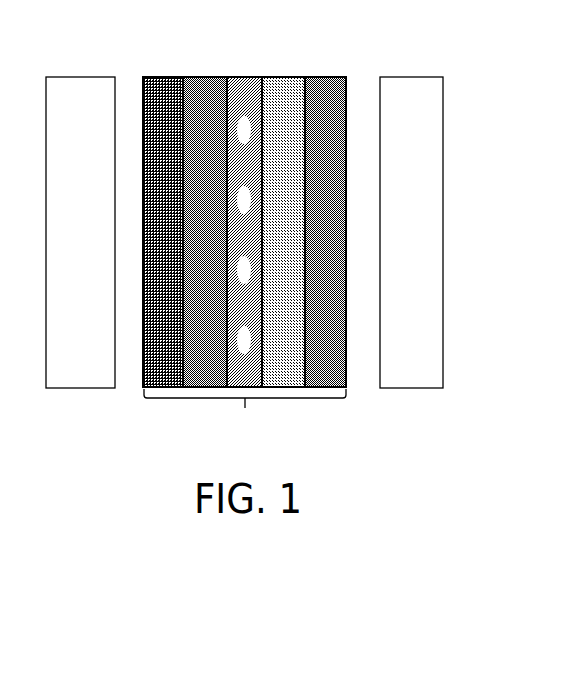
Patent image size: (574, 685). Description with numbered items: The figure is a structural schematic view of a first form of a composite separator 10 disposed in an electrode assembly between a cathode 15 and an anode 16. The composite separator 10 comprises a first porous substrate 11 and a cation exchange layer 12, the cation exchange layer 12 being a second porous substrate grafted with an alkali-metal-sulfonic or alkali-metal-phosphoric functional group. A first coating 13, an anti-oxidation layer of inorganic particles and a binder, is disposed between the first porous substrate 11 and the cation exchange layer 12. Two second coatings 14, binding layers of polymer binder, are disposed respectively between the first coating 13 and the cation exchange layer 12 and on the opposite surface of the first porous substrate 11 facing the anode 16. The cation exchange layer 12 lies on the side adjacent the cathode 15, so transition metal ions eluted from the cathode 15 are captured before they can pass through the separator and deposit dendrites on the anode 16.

The composite separator 10 is at (233, 436).
The first porous substrate 11 is at (285, 77).
The cation exchange layer 12 is at (165, 77).
The first coating 13 is at (245, 77).
The second coating 14 is at (320, 77).
The cathode 15 is at (73, 241).
The anode 16 is at (402, 246).